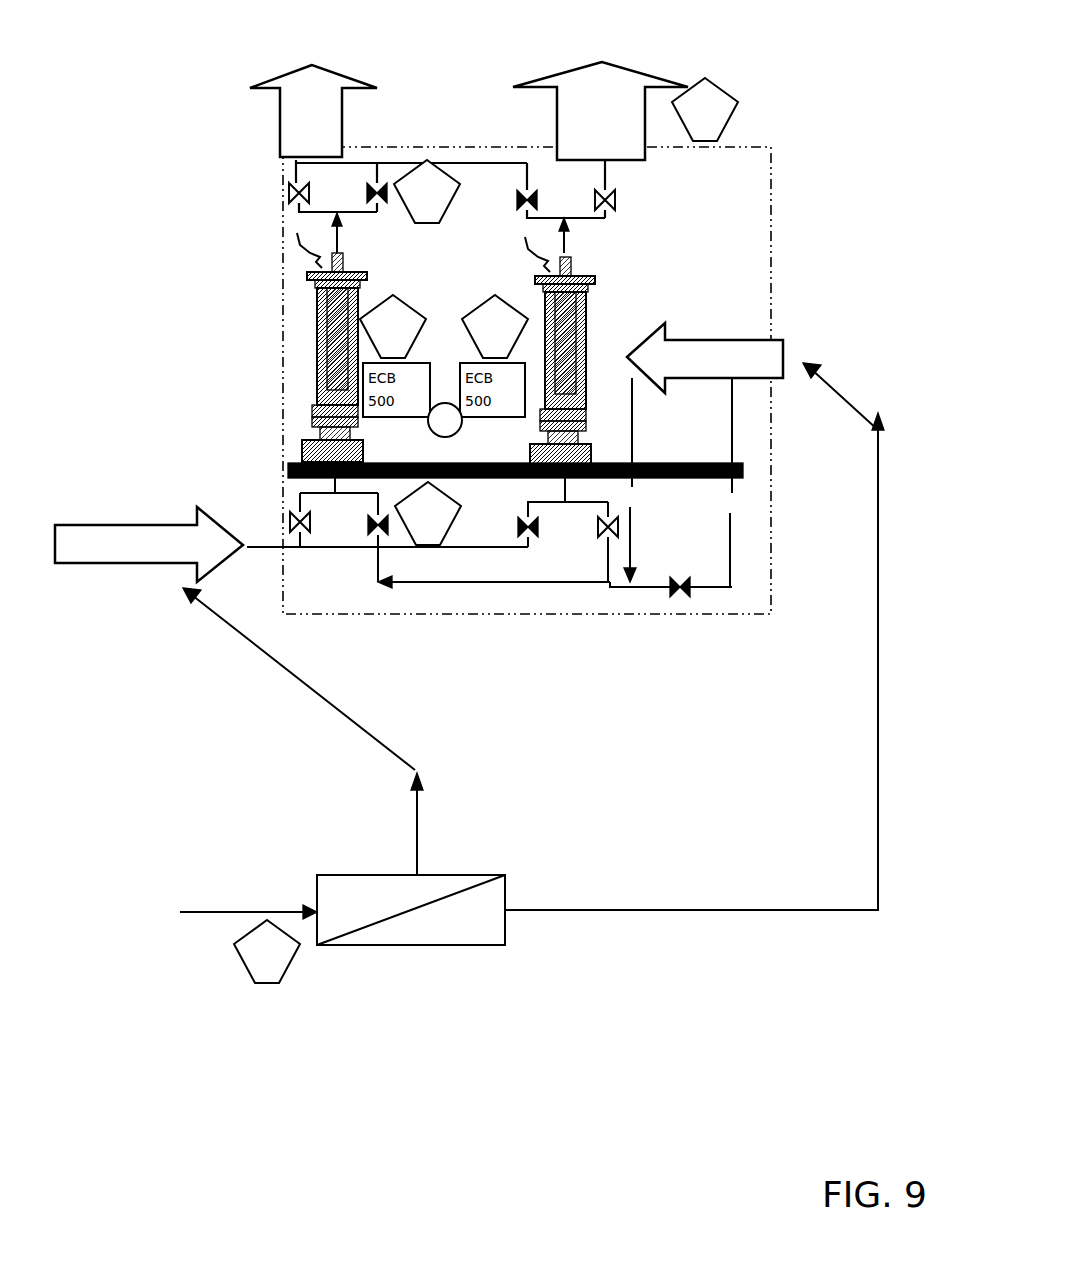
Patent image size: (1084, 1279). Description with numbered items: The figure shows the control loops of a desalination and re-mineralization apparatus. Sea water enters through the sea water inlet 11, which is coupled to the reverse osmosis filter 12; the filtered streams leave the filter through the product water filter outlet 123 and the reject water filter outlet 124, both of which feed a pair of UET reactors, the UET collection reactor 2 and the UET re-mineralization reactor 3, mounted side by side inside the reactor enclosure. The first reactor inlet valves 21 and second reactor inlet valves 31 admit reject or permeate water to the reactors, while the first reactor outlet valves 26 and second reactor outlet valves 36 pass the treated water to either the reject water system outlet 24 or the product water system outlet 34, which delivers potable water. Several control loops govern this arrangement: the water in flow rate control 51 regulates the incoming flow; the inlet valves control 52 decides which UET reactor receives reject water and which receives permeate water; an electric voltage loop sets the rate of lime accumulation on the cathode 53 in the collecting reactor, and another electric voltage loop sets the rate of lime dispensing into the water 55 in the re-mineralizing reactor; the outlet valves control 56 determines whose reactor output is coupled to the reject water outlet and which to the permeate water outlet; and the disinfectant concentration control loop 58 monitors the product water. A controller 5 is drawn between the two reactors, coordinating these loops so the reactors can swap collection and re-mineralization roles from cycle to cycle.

The UET collection reactor 2 is at (318, 348).
The UET re-mineralization reactor 3 is at (572, 320).
The controller 5 is at (445, 420).
The sea water inlet 11 is at (240, 915).
The reverse osmosis filter 12 is at (420, 938).
The first reactor inlet valves 21 is at (288, 518).
The reject water system outlet 24 is at (283, 105).
The first reactor outlet valves 26 is at (280, 193).
The second reactor inlet valves 31 is at (617, 530).
The product water system outlet 34 is at (622, 80).
The second reactor outlet valves 36 is at (625, 197).
The water in flow rate control 51 is at (267, 951).
The inlet valves control 52 is at (428, 513).
The electric voltage control for rate of lime accumulation on cathode 53 is at (393, 326).
The electric voltage control for rate of lime dispensing into water 55 is at (495, 326).
The outlet valves control 56 is at (427, 191).
The disinfectant concentration control loop 58 is at (705, 109).
The product water filter outlet 123 is at (710, 335).
The reject water filter outlet 124 is at (162, 565).